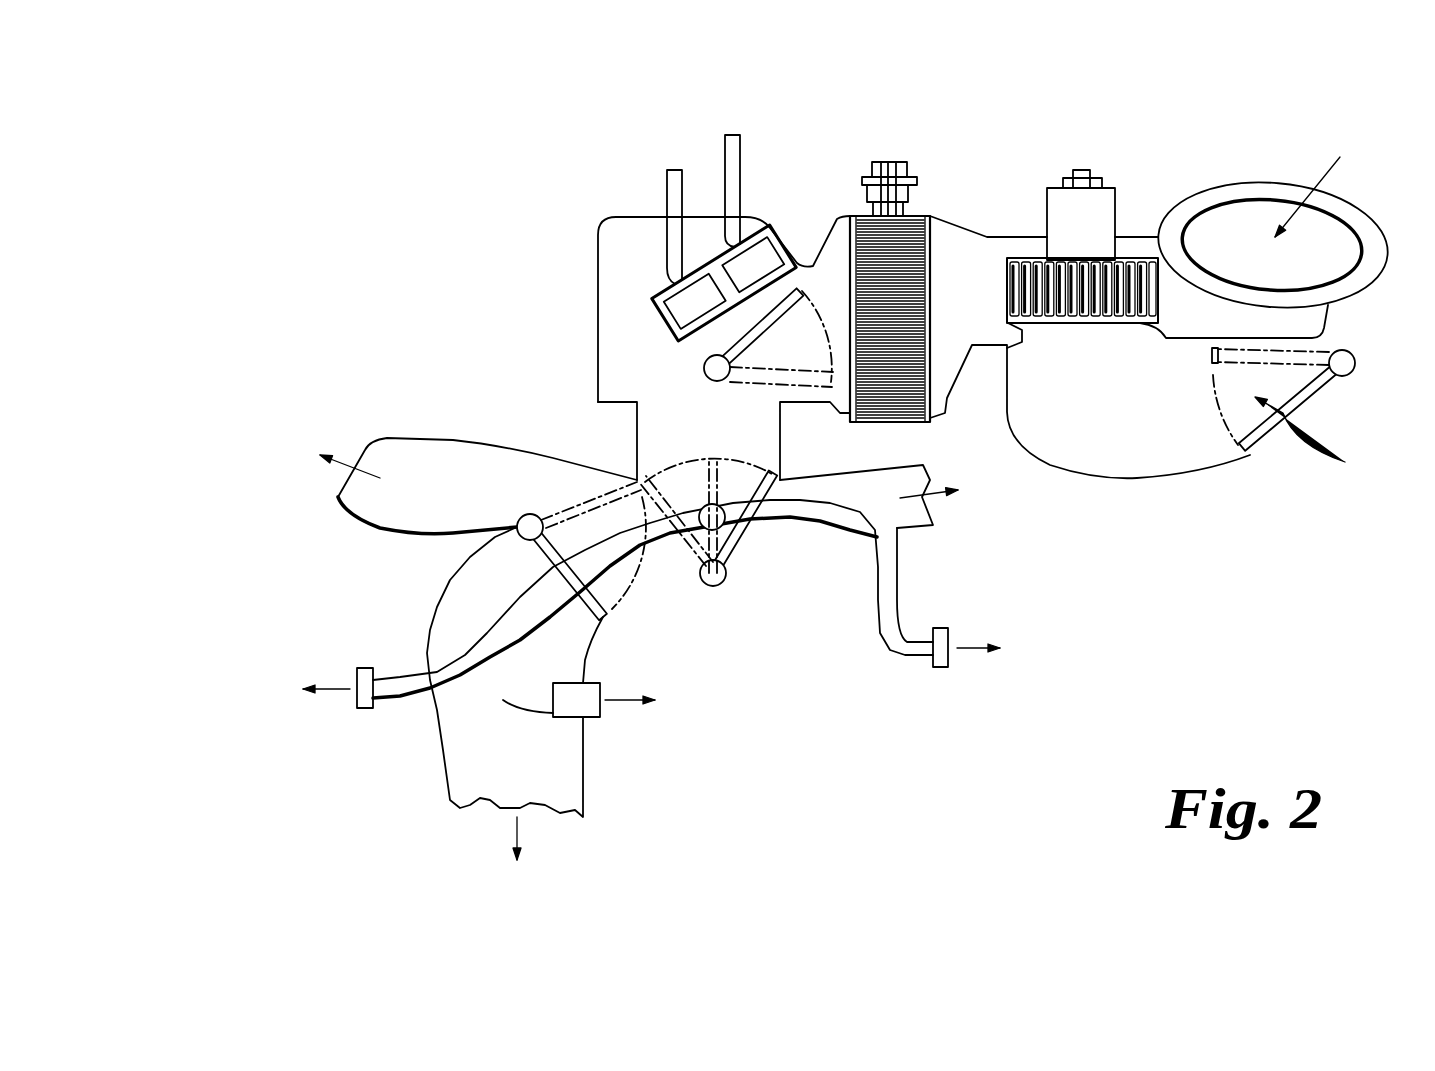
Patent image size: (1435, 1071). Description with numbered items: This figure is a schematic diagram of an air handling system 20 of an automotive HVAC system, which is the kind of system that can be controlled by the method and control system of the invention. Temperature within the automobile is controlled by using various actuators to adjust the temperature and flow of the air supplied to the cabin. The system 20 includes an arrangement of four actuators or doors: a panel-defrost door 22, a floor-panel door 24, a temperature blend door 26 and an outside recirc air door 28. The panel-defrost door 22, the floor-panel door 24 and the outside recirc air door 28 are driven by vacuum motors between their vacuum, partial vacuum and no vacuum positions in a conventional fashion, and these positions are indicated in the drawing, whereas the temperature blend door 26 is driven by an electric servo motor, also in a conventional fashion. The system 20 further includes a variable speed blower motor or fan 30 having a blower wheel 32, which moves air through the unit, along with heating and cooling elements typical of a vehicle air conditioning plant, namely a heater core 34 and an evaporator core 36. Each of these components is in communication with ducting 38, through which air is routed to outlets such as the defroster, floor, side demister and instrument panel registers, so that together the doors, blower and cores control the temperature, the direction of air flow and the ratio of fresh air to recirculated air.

The air handling system 20 is at (1220, 130).
The panel-defrost door 22 is at (553, 563).
The floor-panel door 24 is at (750, 533).
The temperature blend door 26 is at (705, 343).
The outside recirc air door 28 is at (1322, 397).
The blower motor 30 is at (1047, 225).
The blower wheel 32 is at (1133, 250).
The heater core 34 is at (662, 320).
The evaporator core 36 is at (932, 253).
The ducting 38 is at (913, 532).